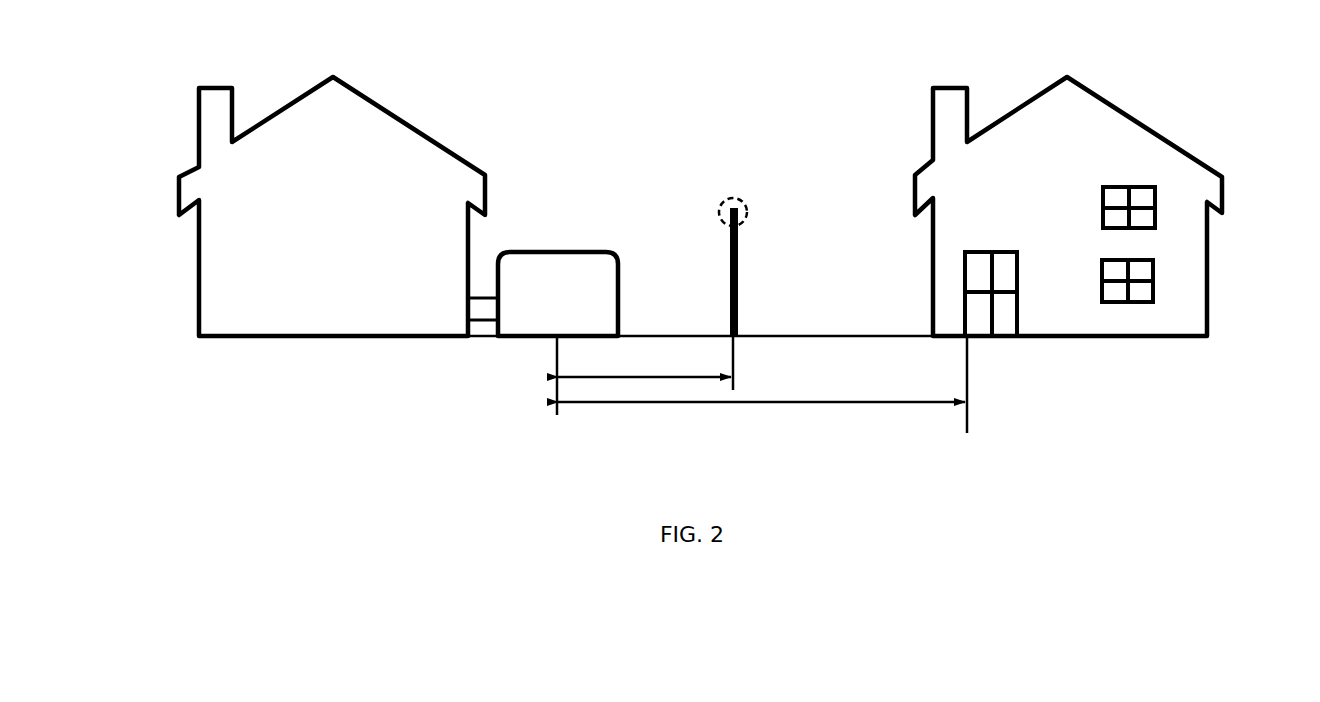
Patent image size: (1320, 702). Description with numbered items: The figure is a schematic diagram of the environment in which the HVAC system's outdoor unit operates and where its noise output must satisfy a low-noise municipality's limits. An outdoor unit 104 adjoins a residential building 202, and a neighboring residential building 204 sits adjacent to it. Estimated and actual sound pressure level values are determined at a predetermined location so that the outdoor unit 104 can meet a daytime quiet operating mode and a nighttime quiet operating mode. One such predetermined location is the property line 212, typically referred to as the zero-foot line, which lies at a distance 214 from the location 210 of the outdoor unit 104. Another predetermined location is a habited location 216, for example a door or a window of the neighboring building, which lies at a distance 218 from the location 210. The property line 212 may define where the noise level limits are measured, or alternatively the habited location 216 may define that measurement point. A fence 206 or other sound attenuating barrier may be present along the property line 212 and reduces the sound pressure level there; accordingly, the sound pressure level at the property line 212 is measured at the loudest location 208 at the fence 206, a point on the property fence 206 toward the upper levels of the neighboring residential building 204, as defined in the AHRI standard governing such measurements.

The residential building 202 is at (332, 206).
The neighboring residential building 204 is at (1068, 206).
The outdoor unit 104 is at (558, 294).
The fence 206 is at (738, 275).
The loudest location 208 is at (741, 198).
The location of the outdoor unit 210 is at (555, 387).
The property line 212 is at (737, 340).
The distance 214 is at (644, 361).
The habited location 216 is at (993, 318).
The distance 218 is at (761, 415).